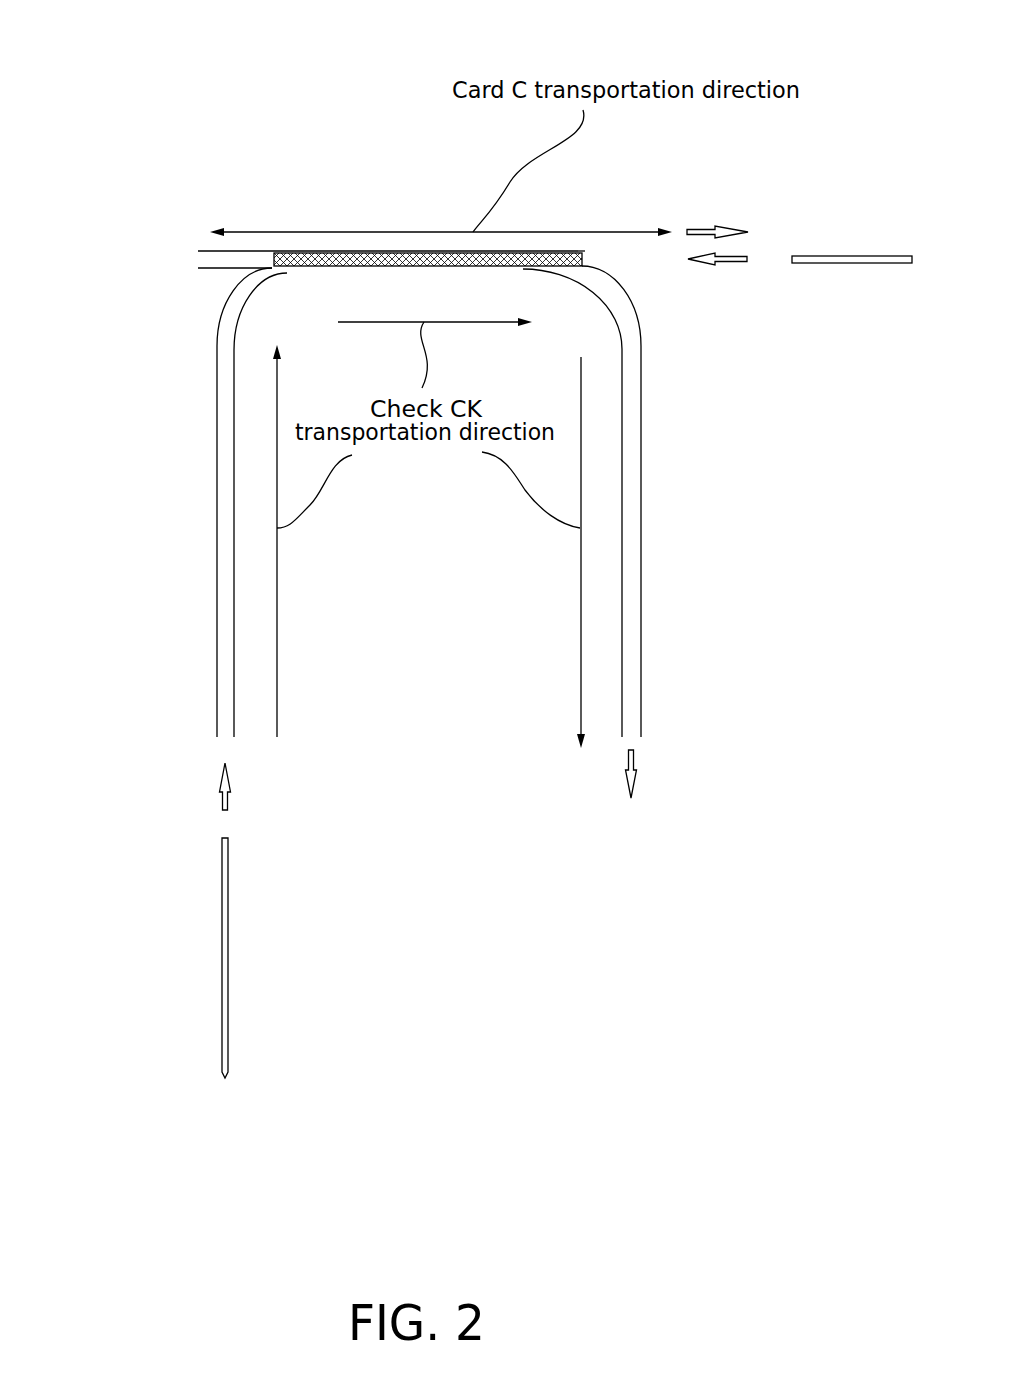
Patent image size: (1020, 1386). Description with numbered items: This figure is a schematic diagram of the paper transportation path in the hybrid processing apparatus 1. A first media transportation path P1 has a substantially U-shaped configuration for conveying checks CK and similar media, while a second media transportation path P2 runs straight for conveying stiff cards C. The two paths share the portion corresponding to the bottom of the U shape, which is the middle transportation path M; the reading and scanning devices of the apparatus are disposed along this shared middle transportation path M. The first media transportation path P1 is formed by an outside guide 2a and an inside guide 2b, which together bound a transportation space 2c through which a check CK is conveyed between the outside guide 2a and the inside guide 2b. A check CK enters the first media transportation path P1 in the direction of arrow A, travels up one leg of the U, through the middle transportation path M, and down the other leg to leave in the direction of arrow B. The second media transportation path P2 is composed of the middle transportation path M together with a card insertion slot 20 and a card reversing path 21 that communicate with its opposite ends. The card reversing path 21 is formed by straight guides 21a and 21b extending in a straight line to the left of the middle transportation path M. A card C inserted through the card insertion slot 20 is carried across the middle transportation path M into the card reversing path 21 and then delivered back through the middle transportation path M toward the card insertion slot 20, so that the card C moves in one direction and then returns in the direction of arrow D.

The card reader apparatus 1 is at (428, 136).
The middle transportation path M is at (337, 251).
The card insertion slot 20 is at (600, 259).
The card reversing path 21 is at (186, 262).
The straight guide 21a is at (197, 250).
The straight guide 21b is at (215, 270).
The second media transportation path P2 is at (580, 238).
The first media transportation path P1 is at (204, 470).
The outside guide 2a is at (216, 555).
The inside guide 2b is at (234, 670).
The transportation space 2c is at (214, 623).
The check insertion direction A is at (220, 800).
The check discharge direction B is at (636, 760).
The card C is at (865, 255).
The card discharge direction D is at (703, 228).
The check CK is at (228, 955).